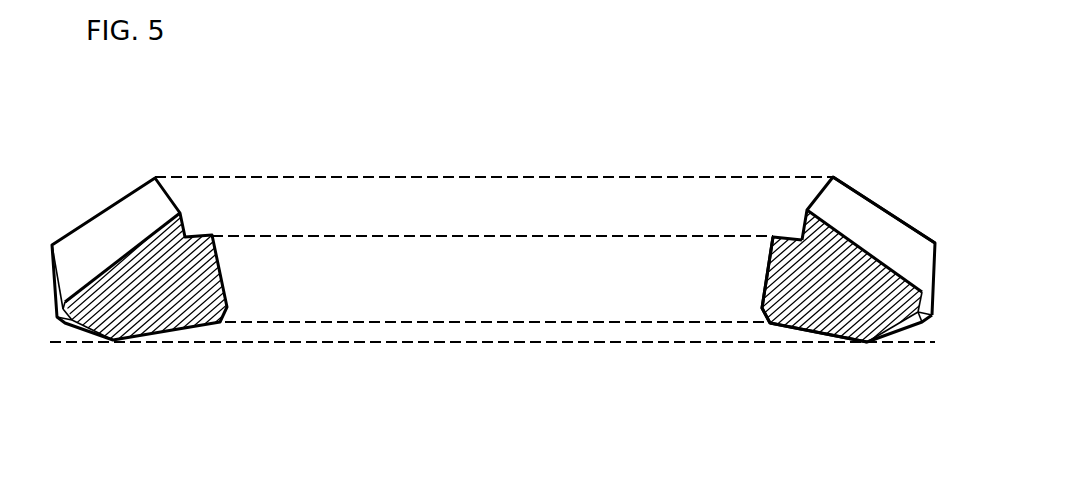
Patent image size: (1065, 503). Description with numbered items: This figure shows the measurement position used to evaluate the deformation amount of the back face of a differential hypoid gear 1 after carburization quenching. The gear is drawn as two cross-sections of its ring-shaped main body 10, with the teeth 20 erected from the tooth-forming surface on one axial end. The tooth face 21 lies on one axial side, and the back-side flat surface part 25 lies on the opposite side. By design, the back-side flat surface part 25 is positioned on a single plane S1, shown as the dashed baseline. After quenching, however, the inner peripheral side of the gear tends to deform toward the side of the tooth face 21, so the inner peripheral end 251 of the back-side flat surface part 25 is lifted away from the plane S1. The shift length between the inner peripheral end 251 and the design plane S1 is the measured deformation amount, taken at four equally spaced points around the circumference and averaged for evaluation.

The differential hypoid gear 1 is at (849, 146).
The ring-shaped main body 10 is at (884, 304).
The teeth 20 is at (868, 227).
The tooth face 21 is at (905, 243).
The back-side flat surface part 25 is at (825, 338).
The inner peripheral end 251 is at (770, 328).
The plane S1 is at (378, 342).